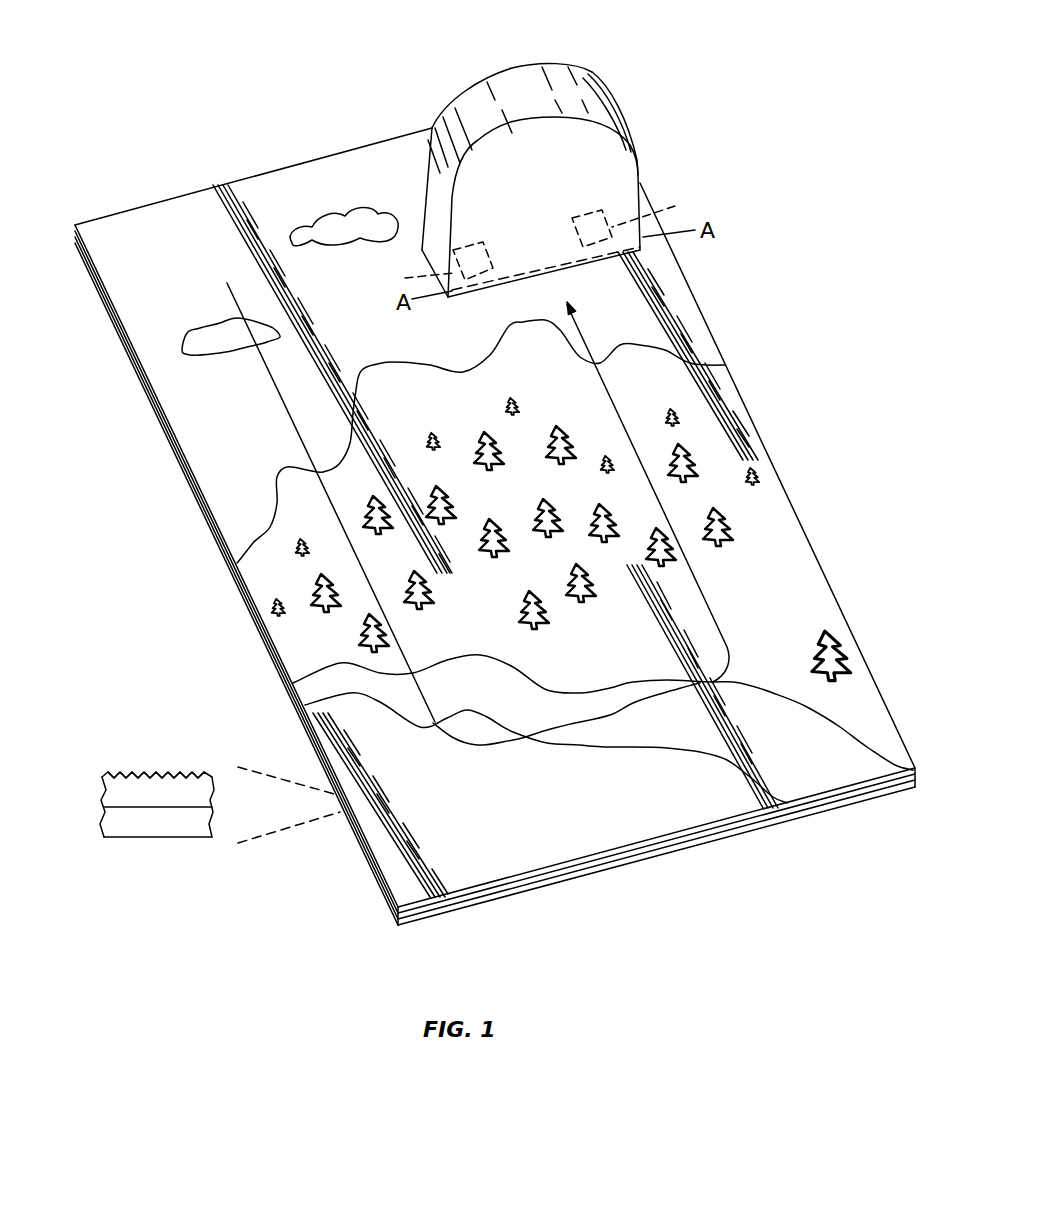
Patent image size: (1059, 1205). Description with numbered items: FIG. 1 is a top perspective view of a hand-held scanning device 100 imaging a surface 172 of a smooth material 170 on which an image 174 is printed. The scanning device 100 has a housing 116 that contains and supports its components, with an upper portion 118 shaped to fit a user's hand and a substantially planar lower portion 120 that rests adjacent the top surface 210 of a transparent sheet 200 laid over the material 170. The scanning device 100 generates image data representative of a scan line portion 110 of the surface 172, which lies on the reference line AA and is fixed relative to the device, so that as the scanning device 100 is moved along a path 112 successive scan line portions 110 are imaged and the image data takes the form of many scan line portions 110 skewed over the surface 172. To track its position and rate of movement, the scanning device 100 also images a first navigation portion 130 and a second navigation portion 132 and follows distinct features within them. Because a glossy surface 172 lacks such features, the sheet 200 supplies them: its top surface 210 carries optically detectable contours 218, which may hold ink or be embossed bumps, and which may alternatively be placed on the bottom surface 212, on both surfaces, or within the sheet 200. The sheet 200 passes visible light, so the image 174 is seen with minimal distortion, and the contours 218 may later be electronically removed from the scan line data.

The scanning device 100 is at (643, 55).
The scan line portion 110 is at (604, 193).
The path 112 is at (722, 600).
The housing 116 is at (508, 65).
The upper portion 118 is at (592, 66).
The lower portion 120 is at (467, 294).
The first navigation portion 130 is at (422, 266).
The second navigation portion 132 is at (650, 217).
The material 170 is at (764, 833).
The surface 172 is at (882, 772).
The image 174 is at (243, 460).
The sheet 200 is at (636, 858).
The top surface 210 is at (523, 818).
The bottom surface 212 is at (831, 800).
The contours 218 is at (125, 777).